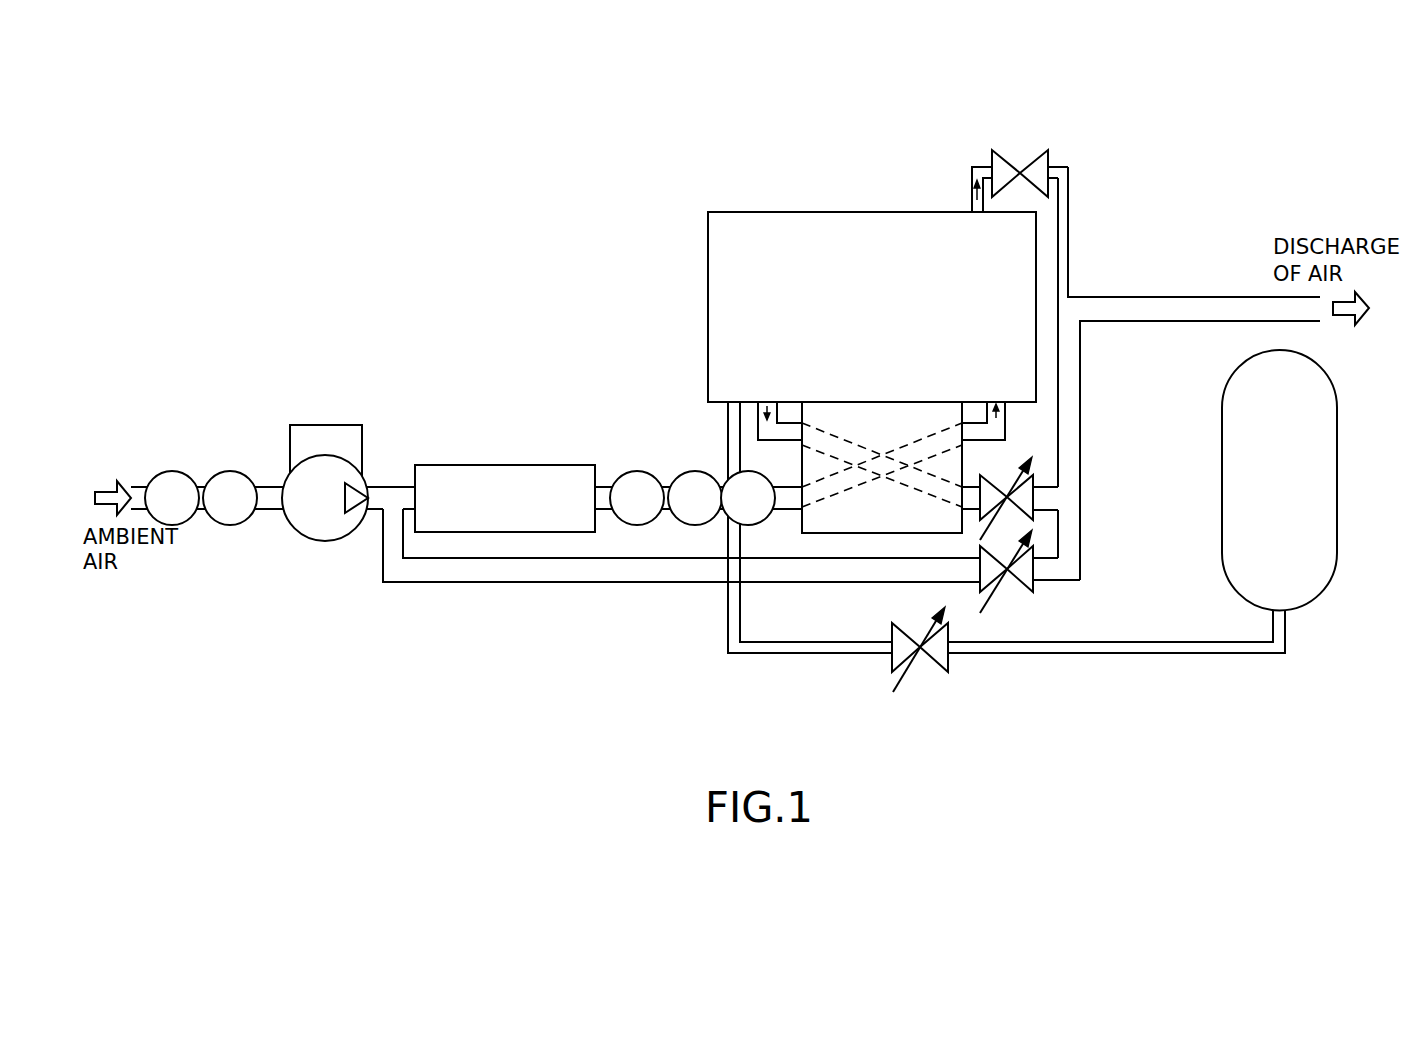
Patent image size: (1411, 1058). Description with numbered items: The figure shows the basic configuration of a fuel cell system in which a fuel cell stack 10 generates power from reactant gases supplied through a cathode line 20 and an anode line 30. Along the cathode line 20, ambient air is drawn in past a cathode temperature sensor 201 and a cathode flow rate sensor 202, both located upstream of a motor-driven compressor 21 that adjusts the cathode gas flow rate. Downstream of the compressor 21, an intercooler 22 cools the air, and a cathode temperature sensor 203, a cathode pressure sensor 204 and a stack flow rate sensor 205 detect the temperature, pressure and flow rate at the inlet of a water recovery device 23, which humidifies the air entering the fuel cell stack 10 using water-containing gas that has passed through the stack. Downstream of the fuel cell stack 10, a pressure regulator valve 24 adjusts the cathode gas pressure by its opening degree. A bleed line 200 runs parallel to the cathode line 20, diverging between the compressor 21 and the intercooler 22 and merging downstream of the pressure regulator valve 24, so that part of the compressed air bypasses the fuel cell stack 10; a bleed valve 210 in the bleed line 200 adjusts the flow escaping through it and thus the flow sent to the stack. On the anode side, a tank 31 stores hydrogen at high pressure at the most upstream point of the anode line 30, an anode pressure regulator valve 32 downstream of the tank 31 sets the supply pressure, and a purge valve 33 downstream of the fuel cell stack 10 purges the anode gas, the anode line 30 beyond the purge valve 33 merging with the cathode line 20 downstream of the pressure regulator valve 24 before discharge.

The fuel cell stack 10 is at (805, 212).
The cathode line 20 is at (402, 487).
The compressor 21 is at (318, 542).
The intercooler 22 is at (508, 465).
The water recovery device (WRD) 23 is at (802, 520).
The pressure regulator valve 24 is at (1040, 478).
The anode line 30 is at (1070, 220).
The tank 31 is at (1337, 472).
The anode pressure regulator valve 32 is at (933, 668).
The purge valve 33 is at (1012, 150).
The bleed line 200 is at (592, 582).
The cathode temperature sensor 201 is at (177, 471).
The cathode flow rate sensor 202 is at (233, 471).
The cathode temperature sensor 203 is at (630, 474).
The cathode pressure sensor 204 is at (688, 474).
The stack flow rate sensor 205 is at (745, 470).
The bleed valve 210 is at (1036, 592).